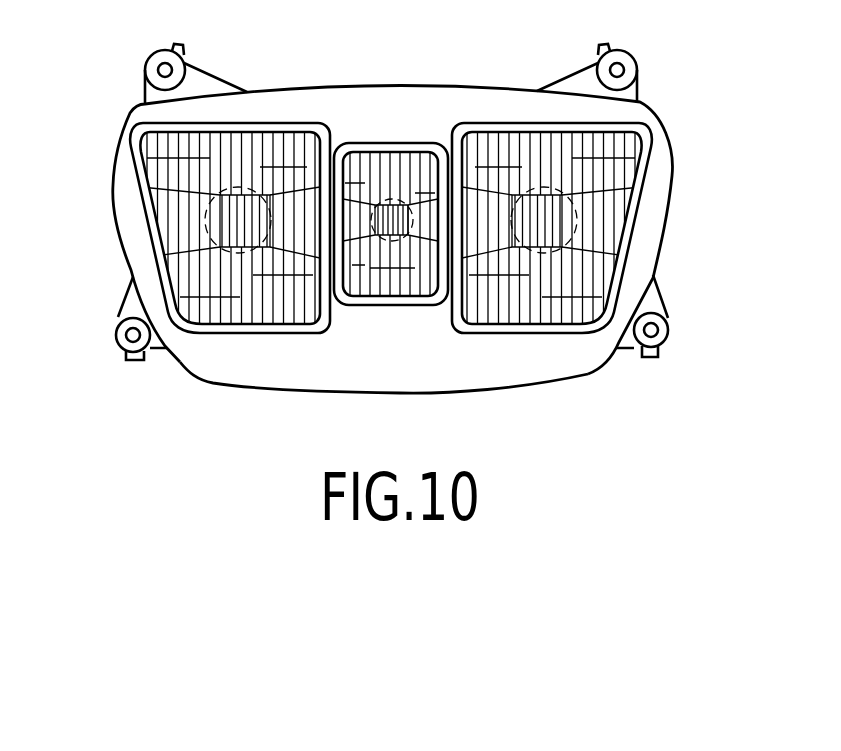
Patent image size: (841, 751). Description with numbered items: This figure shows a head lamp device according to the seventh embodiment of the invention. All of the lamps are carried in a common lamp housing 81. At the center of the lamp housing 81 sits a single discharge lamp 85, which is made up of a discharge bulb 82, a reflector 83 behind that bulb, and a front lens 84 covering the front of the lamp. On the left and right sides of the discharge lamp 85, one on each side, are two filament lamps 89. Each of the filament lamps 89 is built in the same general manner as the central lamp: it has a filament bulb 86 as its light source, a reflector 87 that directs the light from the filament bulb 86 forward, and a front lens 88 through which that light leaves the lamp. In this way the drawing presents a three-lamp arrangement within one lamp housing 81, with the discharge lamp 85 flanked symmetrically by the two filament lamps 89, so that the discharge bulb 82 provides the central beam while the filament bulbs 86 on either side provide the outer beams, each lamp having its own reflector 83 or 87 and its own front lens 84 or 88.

The lamp housing 81 is at (383, 88).
The discharge bulb 82 is at (400, 203).
The reflector 83 is at (449, 165).
The front lens 84 is at (372, 160).
The discharge lamp 85 is at (401, 339).
The filament bulb 86 is at (250, 205).
The reflector 87 is at (198, 228).
The front lens 88 is at (191, 274).
The filament lamps 89 is at (258, 356).